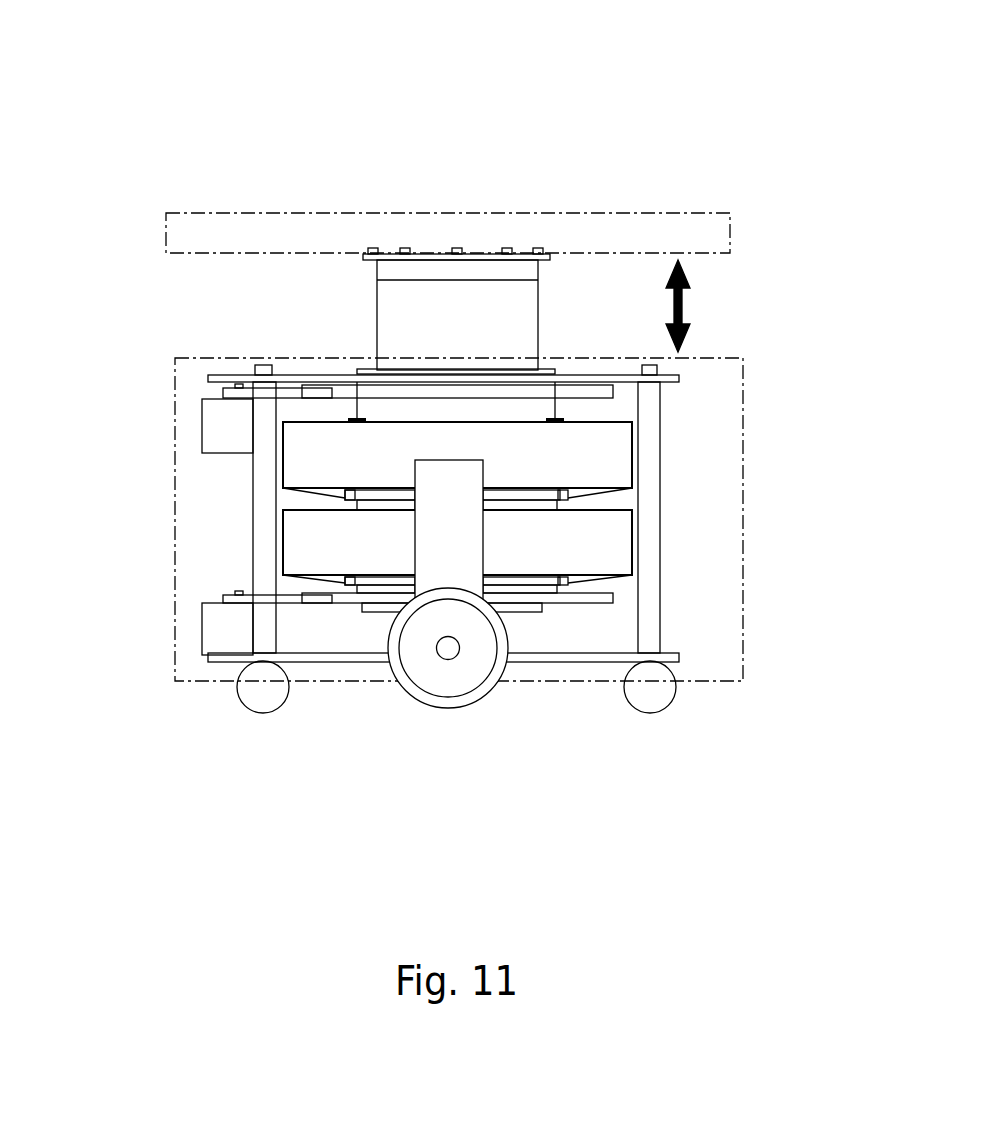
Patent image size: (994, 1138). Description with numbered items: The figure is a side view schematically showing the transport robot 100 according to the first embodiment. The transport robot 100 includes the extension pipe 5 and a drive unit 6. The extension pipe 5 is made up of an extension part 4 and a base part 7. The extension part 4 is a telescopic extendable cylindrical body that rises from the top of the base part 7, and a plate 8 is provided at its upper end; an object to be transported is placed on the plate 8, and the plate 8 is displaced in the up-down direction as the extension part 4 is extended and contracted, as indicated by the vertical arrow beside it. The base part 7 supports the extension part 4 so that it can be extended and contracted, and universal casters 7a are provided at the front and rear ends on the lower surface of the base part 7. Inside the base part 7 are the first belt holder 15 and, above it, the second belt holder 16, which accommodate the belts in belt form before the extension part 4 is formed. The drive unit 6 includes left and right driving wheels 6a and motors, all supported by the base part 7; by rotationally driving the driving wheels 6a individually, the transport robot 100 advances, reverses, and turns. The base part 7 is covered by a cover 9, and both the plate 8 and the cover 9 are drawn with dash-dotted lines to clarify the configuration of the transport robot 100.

The transport robot 100 is at (812, 101).
The plate 8 is at (710, 240).
The extension part 4 is at (389, 271).
The cover 9 is at (717, 498).
The extension pipe 5 is at (183, 633).
The second belt holder 16 is at (612, 440).
The first belt holder 15 is at (612, 553).
The base part 7 is at (527, 581).
The universal casters 7a is at (652, 692).
The drive unit 6 is at (434, 692).
The driving wheels 6a is at (455, 697).